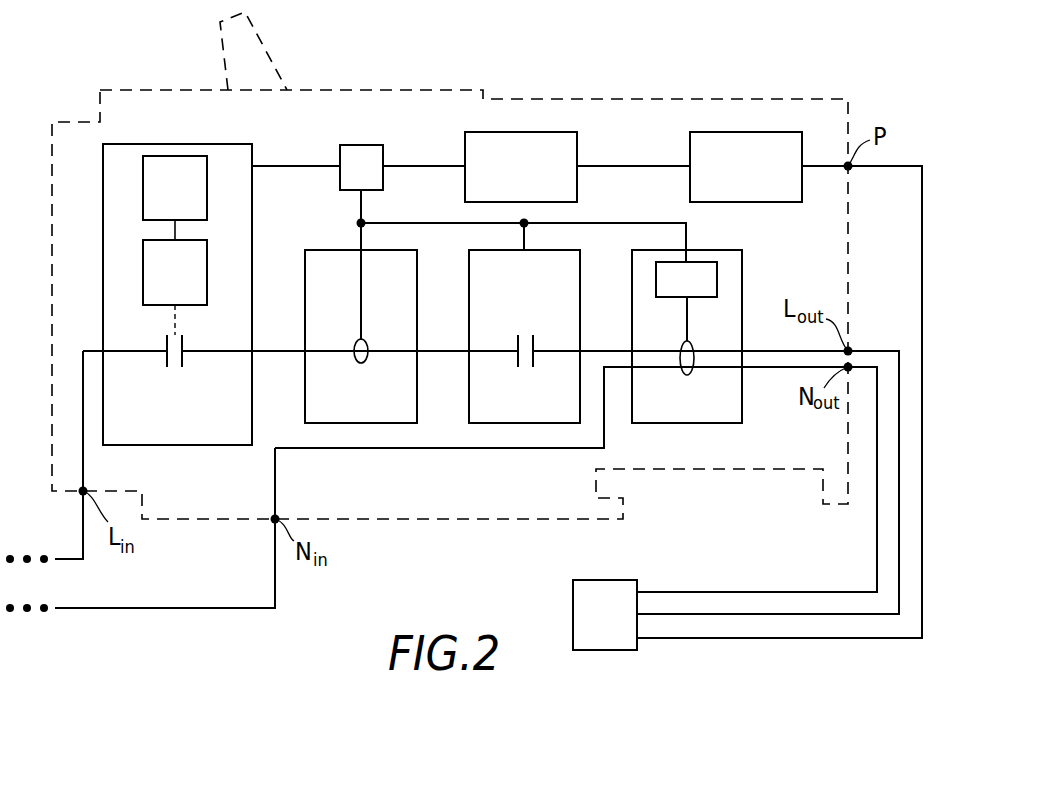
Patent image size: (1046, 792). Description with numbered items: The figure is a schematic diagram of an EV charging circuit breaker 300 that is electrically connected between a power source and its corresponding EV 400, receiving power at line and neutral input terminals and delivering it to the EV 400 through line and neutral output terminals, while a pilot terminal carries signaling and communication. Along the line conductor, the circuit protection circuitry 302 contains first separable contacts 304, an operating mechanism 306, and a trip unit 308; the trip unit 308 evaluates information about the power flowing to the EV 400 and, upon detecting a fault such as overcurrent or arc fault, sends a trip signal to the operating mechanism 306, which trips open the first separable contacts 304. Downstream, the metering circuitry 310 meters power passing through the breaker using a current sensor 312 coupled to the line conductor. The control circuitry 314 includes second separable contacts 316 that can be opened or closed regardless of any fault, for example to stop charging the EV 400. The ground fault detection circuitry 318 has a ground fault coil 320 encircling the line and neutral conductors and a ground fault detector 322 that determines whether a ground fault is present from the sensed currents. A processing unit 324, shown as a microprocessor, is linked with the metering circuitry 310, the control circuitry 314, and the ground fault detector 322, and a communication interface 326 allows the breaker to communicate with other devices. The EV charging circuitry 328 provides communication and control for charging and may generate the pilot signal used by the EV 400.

The EV charging circuit breaker 300 is at (115, 34).
The circuit protection circuitry 302 is at (222, 446).
The first separable contacts 304 is at (190, 333).
The operating mechanism 306 is at (143, 262).
The trip unit 308 is at (143, 190).
The metering circuitry 310 is at (305, 412).
The current sensor 312 is at (355, 346).
The control circuitry 314 is at (469, 412).
The second separable contacts 316 is at (527, 332).
The ground fault detection circuitry 318 is at (688, 423).
The ground fault coil 320 is at (687, 376).
The ground fault detector 322 is at (656, 282).
The processing unit 324 is at (340, 152).
The communication interface 326 is at (577, 142).
The electric vehicle charging circuitry 328 is at (748, 202).
The EV 400 is at (615, 580).